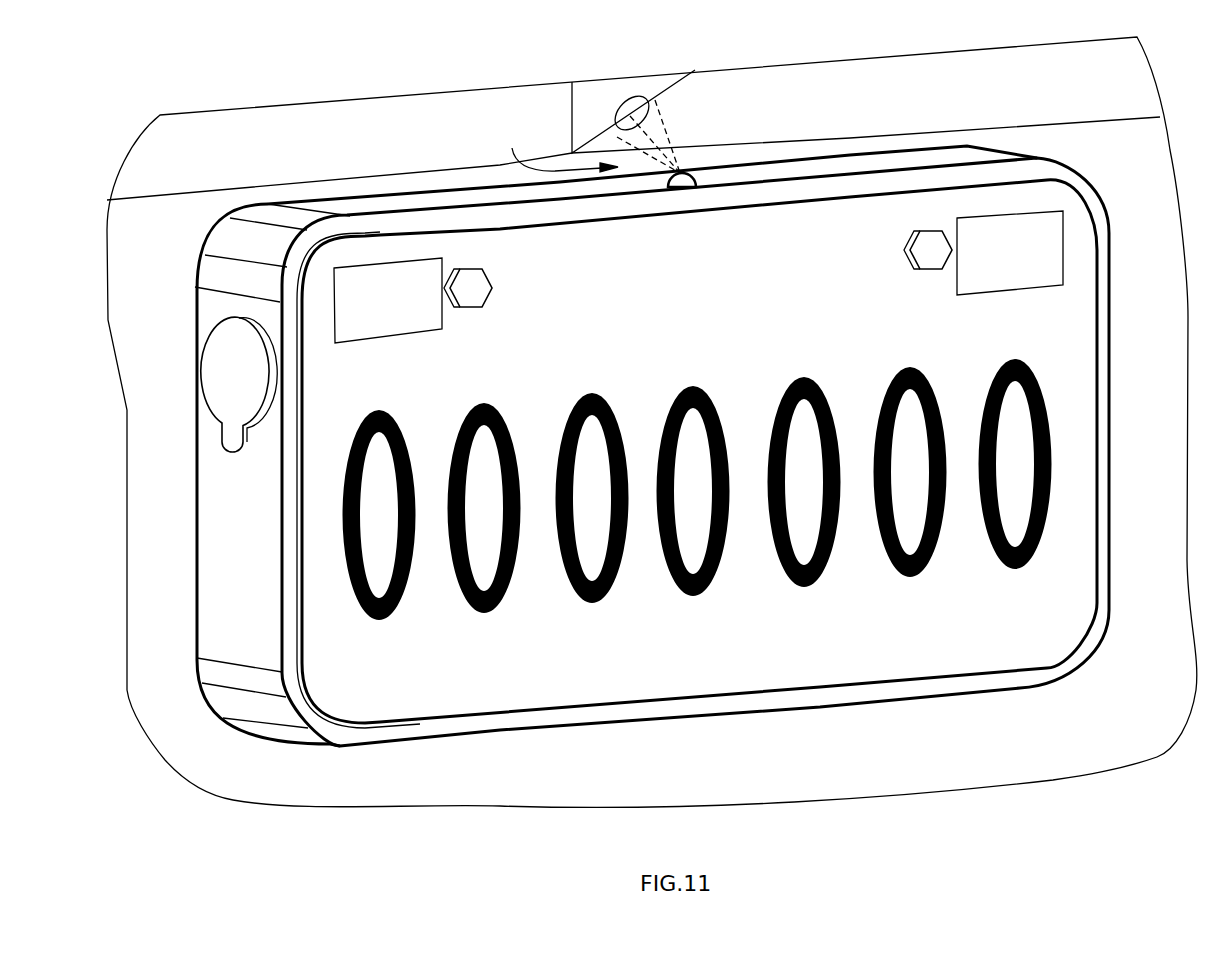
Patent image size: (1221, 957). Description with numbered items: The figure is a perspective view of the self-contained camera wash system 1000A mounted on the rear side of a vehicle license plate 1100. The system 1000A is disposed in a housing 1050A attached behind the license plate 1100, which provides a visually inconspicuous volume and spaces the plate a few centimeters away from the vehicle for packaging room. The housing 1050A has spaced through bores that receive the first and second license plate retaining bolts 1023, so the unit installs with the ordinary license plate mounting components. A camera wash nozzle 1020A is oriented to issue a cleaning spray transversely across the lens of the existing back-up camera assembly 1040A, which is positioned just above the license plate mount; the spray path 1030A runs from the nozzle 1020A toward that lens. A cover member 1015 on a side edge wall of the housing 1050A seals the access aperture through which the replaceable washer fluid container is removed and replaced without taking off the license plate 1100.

The self-contained camera wash system 1000A is at (197, 623).
The cover member 1015 is at (212, 355).
The camera wash nozzle 1020A is at (698, 185).
The license plate retaining bolts 1023 is at (473, 283).
The light path 1030A is at (551, 149).
The back-up camera assembly 1040A is at (616, 110).
The housing 1050A is at (213, 525).
The license plate 1100 is at (1085, 353).